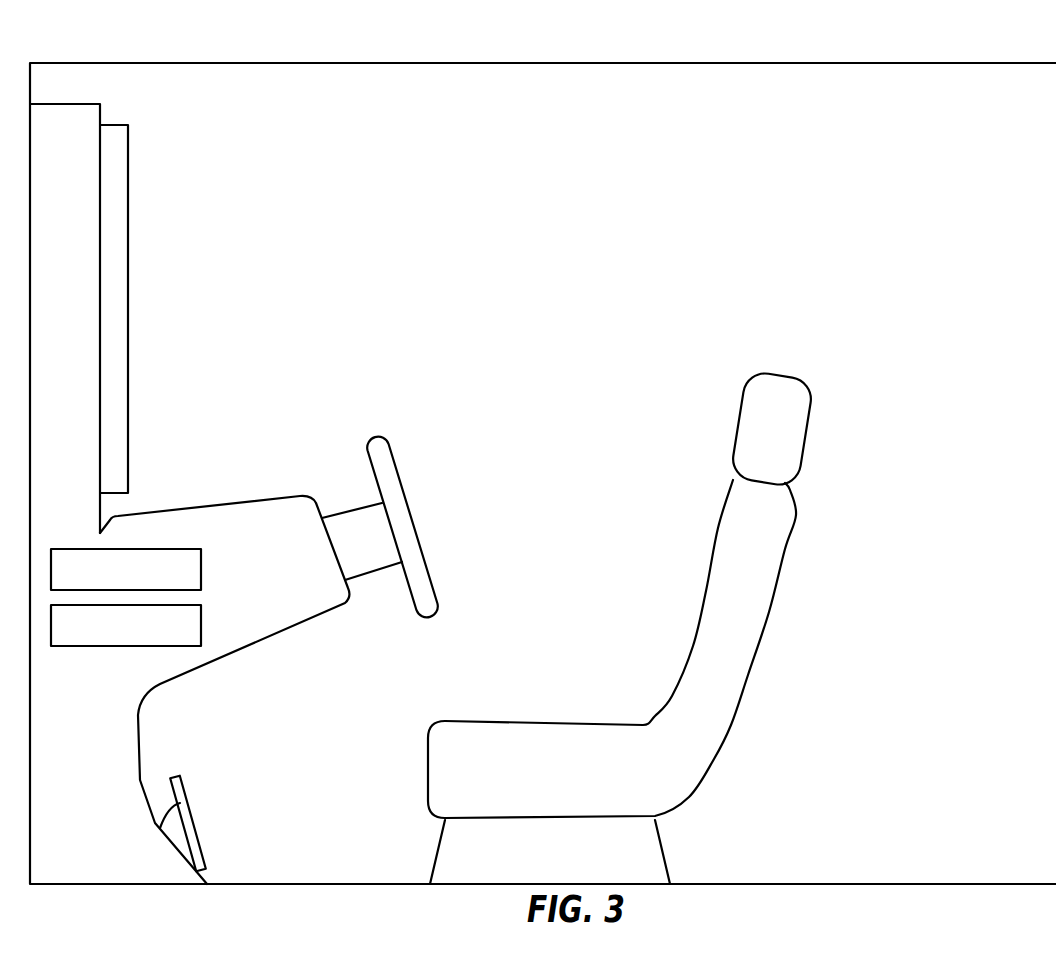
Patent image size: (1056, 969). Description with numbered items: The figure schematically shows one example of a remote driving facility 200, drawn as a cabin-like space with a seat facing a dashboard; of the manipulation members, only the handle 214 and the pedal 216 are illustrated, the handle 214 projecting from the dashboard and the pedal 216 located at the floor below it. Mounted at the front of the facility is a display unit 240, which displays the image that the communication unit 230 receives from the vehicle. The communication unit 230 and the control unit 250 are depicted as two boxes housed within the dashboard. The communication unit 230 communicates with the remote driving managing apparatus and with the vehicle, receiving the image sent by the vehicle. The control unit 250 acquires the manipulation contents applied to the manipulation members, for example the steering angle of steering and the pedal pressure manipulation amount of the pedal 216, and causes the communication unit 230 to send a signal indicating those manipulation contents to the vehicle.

The remote driving facility 200 is at (78, 40).
The handle 214 is at (398, 448).
The pedal 216 is at (185, 787).
The communication unit 230 is at (205, 575).
The display unit 240 is at (128, 162).
The control unit 250 is at (205, 630).